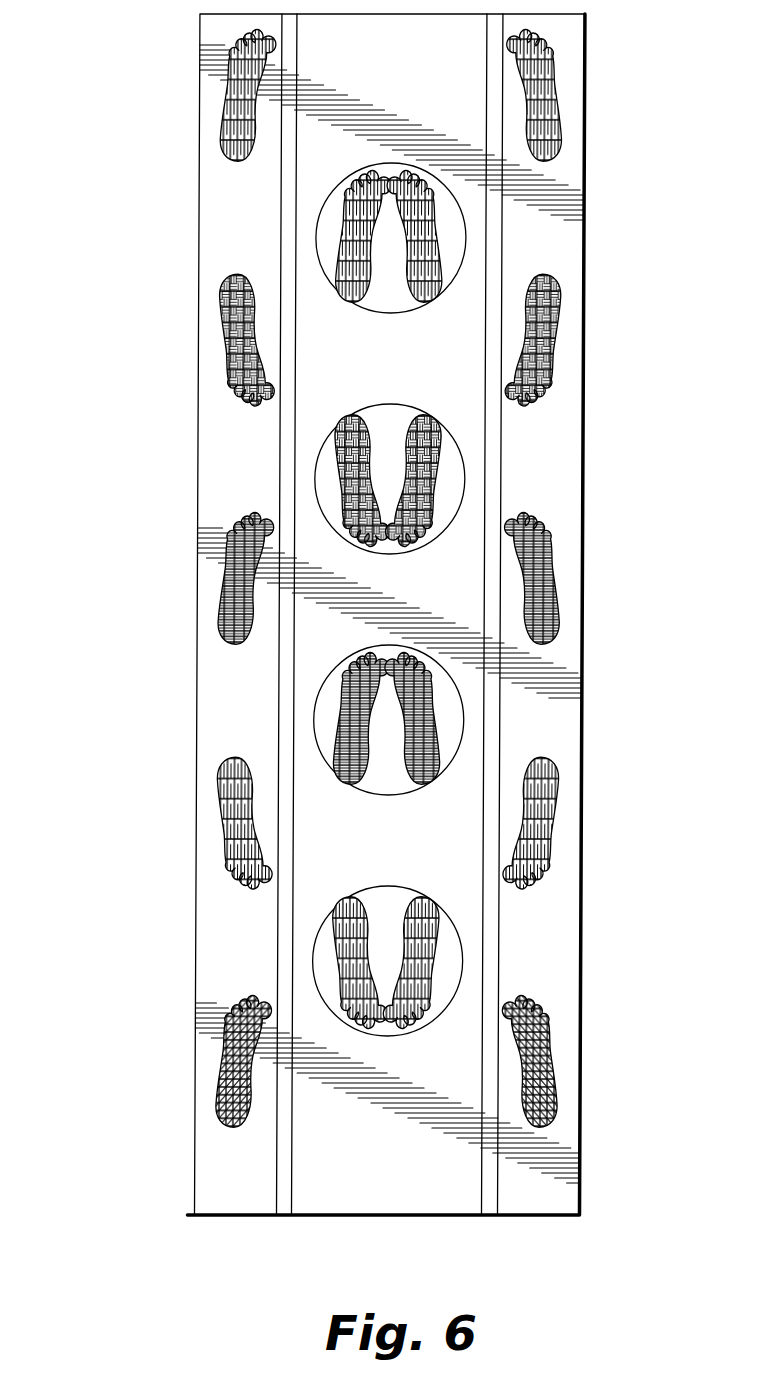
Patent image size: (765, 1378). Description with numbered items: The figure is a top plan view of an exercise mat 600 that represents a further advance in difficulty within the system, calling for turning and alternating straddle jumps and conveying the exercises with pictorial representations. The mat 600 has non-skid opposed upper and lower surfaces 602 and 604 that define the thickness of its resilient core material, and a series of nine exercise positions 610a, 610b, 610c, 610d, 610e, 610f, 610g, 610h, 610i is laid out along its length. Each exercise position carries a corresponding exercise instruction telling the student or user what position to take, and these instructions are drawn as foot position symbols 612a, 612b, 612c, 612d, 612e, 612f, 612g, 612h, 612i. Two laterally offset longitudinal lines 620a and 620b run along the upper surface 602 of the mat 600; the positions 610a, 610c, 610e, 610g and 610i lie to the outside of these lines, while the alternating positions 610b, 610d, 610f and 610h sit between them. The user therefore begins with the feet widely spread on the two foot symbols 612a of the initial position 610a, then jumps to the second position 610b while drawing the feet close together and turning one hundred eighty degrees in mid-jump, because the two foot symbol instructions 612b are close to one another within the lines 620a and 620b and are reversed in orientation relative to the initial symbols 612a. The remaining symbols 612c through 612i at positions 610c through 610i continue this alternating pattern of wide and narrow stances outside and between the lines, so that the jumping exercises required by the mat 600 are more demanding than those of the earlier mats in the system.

The exercise mat 600 is at (150, 1252).
The upper surface 602 is at (351, 1171).
The lower surface 604 is at (423, 1167).
The exercise position 610a is at (194, 1037).
The exercise position 610b is at (318, 940).
The exercise position 610c is at (196, 797).
The exercise position 610d is at (318, 699).
The exercise position 610e is at (197, 553).
The exercise position 610f is at (318, 460).
The exercise position 610g is at (200, 314).
The exercise position 610h is at (318, 218).
The exercise position 610i is at (200, 73).
The foot position symbol 612a is at (512, 1111).
The foot position symbol 612b is at (466, 940).
The foot position symbol 612c is at (517, 869).
The foot position symbol 612d is at (466, 699).
The foot position symbol 612e is at (512, 624).
The foot position symbol 612f is at (466, 458).
The foot position symbol 612g is at (517, 381).
The foot position symbol 612h is at (466, 217).
The foot position symbol 612i is at (517, 93).
The longitudinal line 620a is at (277, 1147).
The longitudinal line 620b is at (497, 1147).